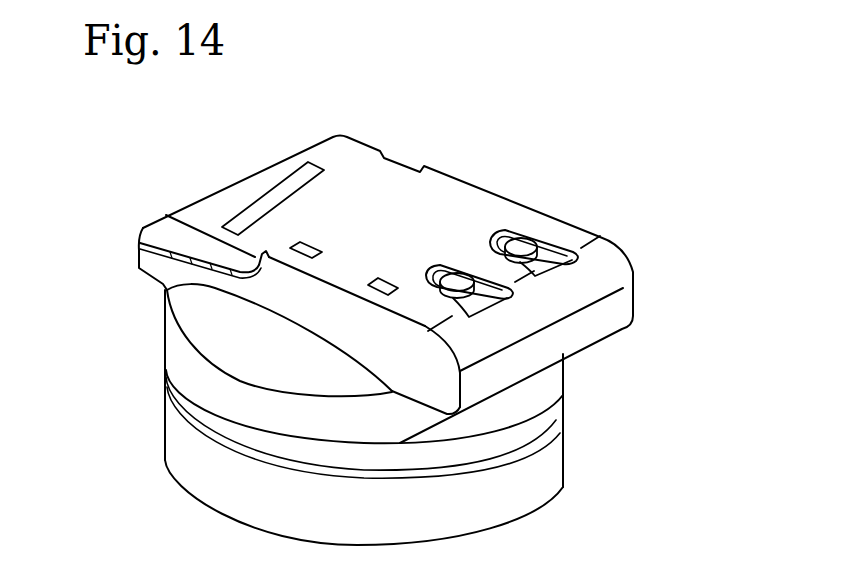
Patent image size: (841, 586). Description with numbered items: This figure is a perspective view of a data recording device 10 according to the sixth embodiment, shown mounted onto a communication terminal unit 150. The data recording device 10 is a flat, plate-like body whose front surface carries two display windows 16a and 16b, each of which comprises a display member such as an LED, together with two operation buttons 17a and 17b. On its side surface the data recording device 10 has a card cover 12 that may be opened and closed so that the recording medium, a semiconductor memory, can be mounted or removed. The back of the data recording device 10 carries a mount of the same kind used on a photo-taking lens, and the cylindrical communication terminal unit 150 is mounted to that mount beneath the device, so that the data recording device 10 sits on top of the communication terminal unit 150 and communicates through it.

The data recording device 10 is at (483, 186).
The card cover 12 is at (207, 208).
The display window 16a is at (390, 278).
The display window 16b is at (300, 243).
The operation button 17a is at (470, 288).
The operation button 17b is at (530, 250).
The communication terminal unit 150 is at (549, 456).